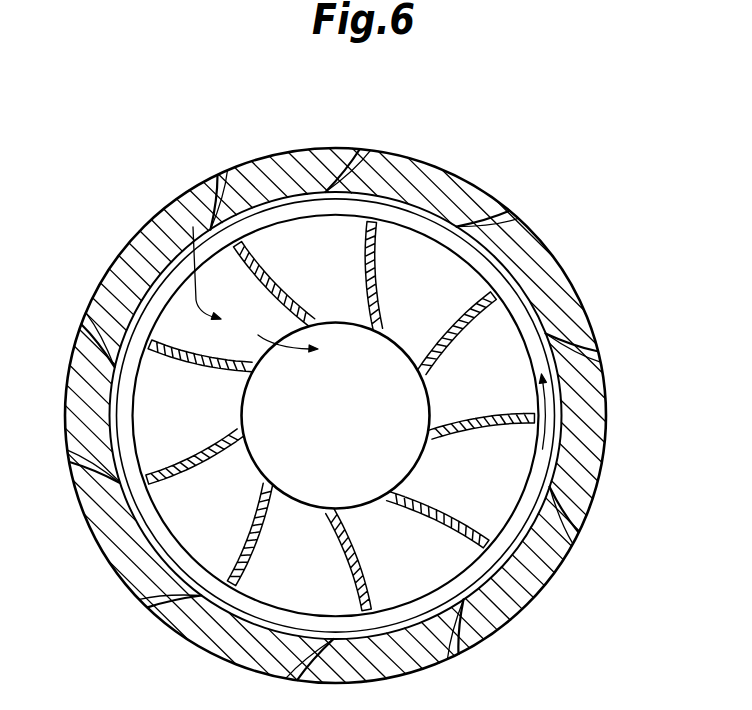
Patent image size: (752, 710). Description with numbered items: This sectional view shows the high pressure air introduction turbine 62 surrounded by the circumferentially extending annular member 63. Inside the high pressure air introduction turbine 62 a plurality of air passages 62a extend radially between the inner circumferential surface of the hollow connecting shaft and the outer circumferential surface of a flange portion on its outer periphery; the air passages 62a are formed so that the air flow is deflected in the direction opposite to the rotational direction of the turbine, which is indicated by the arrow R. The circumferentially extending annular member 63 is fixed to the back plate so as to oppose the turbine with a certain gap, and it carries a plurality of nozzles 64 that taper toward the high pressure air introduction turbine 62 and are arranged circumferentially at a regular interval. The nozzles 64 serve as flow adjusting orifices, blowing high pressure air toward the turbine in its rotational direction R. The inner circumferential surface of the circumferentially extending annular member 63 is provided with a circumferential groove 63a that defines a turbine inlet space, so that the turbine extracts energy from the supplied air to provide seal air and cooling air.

The high pressure air introduction turbine 62 is at (170, 290).
The air passages 62a is at (346, 281).
The circumferentially extending annular member 63 is at (553, 248).
The circumferential groove 63a is at (424, 213).
The nozzles 64 is at (358, 150).
The arrow indicating rotational direction R is at (553, 409).